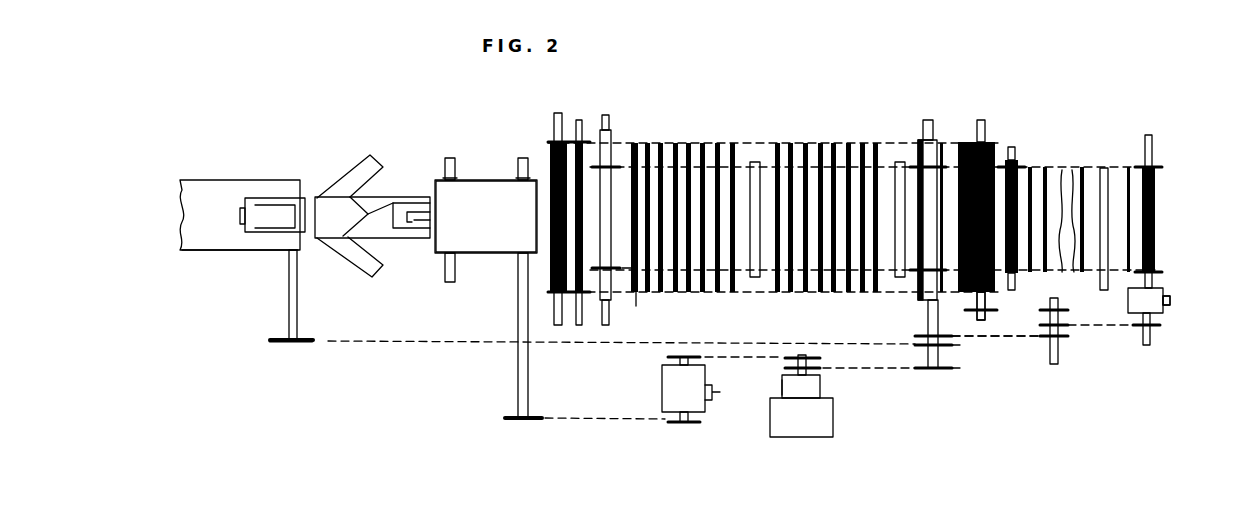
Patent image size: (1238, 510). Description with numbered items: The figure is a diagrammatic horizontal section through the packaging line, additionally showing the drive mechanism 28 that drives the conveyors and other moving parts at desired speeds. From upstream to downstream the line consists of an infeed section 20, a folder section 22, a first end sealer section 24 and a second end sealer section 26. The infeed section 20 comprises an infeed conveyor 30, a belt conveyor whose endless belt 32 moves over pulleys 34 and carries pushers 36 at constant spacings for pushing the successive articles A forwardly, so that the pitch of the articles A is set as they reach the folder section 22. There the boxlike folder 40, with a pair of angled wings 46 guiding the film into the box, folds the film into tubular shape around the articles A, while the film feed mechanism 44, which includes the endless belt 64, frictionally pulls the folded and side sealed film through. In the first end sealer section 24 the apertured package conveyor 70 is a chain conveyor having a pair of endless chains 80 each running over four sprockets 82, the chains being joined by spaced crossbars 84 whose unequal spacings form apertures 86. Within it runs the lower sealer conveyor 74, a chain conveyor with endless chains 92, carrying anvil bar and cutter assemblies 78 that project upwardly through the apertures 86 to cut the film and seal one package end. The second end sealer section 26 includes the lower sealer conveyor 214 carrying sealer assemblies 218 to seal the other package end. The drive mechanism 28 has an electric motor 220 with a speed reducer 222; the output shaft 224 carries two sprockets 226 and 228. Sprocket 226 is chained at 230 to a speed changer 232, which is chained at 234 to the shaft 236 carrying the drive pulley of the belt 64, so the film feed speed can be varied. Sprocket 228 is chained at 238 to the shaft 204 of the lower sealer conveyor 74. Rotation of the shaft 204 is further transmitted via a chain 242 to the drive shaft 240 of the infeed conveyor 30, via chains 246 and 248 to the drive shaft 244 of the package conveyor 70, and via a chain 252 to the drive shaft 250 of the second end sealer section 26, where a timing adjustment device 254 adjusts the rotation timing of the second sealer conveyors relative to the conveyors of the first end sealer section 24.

The infeed section 20 is at (178, 81).
The folder section 22 is at (535, 97).
The first end sealer section 24 is at (553, 99).
The second end sealer section 26 is at (1150, 99).
The drive mechanism 28 is at (502, 418).
The infeed conveyor 30 is at (185, 179).
The endless belt 32 is at (208, 253).
The pulleys 34 is at (293, 258).
The pushers 36 is at (238, 195).
The articles A is at (268, 203).
The folder 40 is at (384, 193).
The film feed mechanism 44 is at (467, 178).
The angled wings 46 is at (351, 170).
The endless belt 64 is at (487, 178).
The package conveyor 70 is at (808, 143).
The lower sealer conveyor 74 is at (681, 162).
The anvil bar and cutter assemblies 78 is at (752, 162).
The endless chains 80 is at (787, 144).
The sprockets 82 is at (552, 140).
The crossbars 84 is at (842, 292).
The apertures 86 is at (619, 176).
The endless chains 92 is at (653, 165).
The shaft 204 is at (928, 350).
The lower sealer conveyor 214 is at (1122, 274).
The sealer assemblies 218 is at (1098, 176).
The electric motor 220 is at (822, 425).
The speed reducer 222 is at (812, 392).
The output shaft 224 is at (781, 378).
The sprocket 226 is at (792, 356).
The sprocket 228 is at (790, 368).
The chain 230 is at (728, 357).
The speed changer 232 is at (665, 380).
The chain 234 is at (606, 417).
The shaft 236 is at (518, 366).
The chain 238 is at (888, 369).
The drive shaft 240 is at (294, 322).
The chain 242 is at (375, 346).
The drive shaft 244 is at (988, 320).
The chain 246 is at (970, 338).
The chain 248 is at (1013, 315).
The drive shaft 250 is at (1150, 345).
The chain 252 is at (1092, 328).
The timing adjustment device 254 is at (1165, 306).